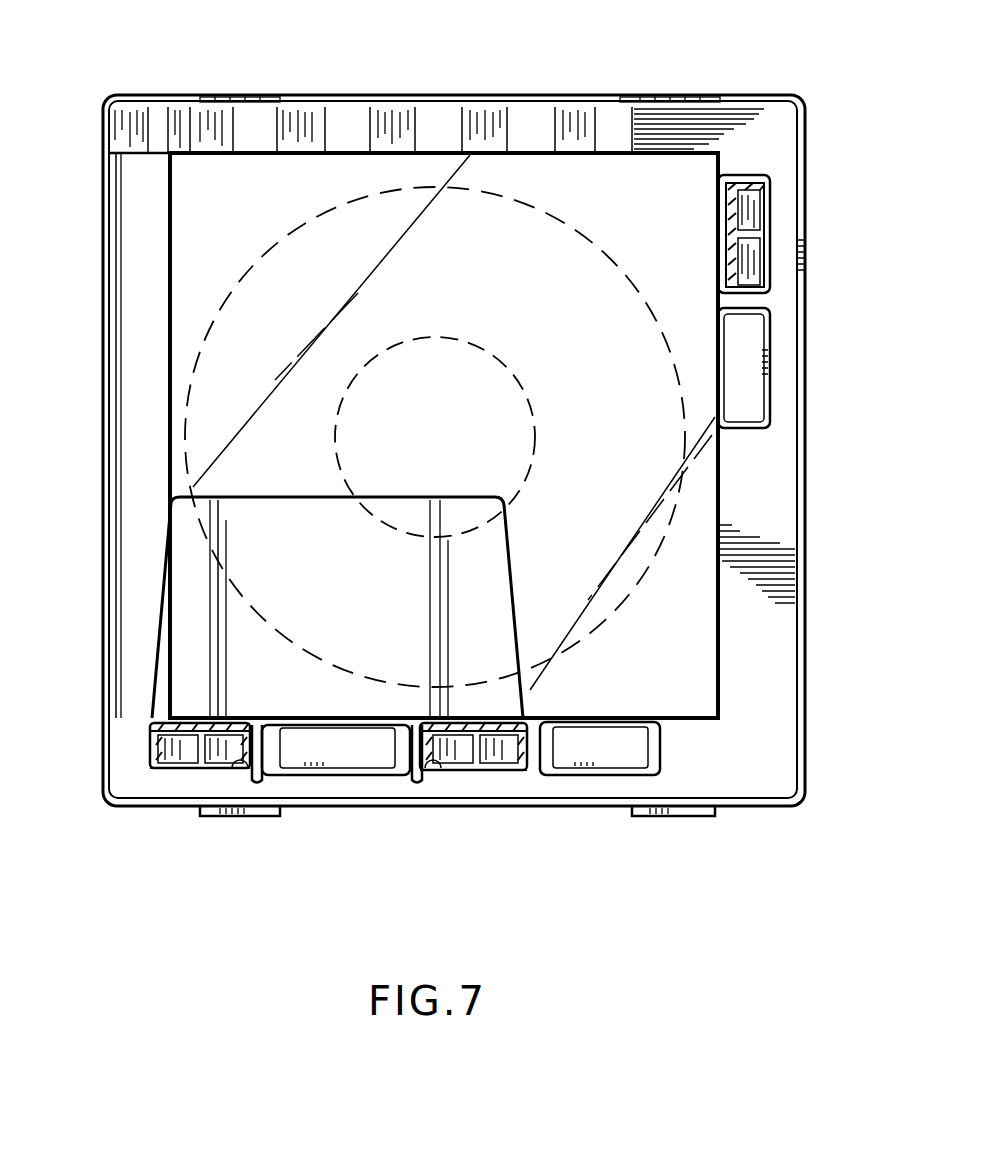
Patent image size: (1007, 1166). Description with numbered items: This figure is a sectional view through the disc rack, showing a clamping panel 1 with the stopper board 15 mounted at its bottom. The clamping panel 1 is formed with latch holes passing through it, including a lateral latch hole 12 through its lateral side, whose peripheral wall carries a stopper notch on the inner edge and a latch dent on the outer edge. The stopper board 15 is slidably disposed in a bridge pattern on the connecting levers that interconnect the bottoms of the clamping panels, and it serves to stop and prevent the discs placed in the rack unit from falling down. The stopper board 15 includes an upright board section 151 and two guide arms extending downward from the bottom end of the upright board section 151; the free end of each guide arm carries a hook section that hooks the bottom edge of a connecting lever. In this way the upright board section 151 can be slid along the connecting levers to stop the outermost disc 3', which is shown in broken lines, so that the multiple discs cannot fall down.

The clamping panel 1 is at (748, 96).
The outermost disc 3' is at (388, 435).
The lateral latch hole 12 is at (765, 260).
The stopper board 15 is at (197, 575).
The upright board section 151 is at (210, 626).